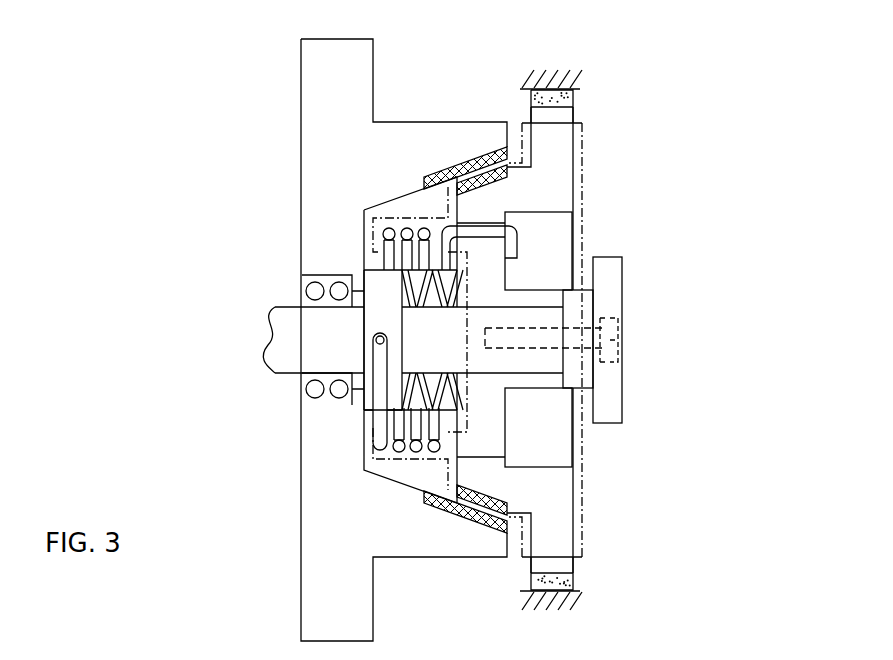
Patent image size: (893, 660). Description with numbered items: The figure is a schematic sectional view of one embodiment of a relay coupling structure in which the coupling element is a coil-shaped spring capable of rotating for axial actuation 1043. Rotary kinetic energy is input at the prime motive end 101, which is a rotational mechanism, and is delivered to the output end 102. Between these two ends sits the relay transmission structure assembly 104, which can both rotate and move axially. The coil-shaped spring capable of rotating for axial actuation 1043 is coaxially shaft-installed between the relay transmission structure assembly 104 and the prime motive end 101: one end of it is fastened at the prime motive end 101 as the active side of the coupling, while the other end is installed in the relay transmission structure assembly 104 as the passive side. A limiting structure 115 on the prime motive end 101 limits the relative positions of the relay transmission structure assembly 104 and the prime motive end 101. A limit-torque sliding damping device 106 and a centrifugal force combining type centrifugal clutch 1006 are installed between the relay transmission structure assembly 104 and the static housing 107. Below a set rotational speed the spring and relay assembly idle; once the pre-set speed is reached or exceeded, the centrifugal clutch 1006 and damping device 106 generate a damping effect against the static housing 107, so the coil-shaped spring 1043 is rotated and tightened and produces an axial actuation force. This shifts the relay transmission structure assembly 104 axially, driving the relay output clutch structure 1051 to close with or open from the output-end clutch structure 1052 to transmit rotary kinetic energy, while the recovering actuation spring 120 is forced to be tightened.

The output end 102 is at (305, 83).
The prime motive end 101 is at (284, 322).
The recovering actuation spring 120 is at (422, 403).
The coil-shaped spring capable of rotating for axial actuation 1043 is at (405, 223).
The output-end clutch structure 1052 is at (434, 176).
The relay output clutch structure 1051 is at (483, 180).
The relay transmission structure assembly 104 is at (582, 170).
The limit-torque sliding damping device 106 is at (572, 97).
The centrifugal force combining type centrifugal clutch 1006 is at (562, 117).
The static housing 107 is at (547, 72).
The limiting structure 115 is at (608, 272).